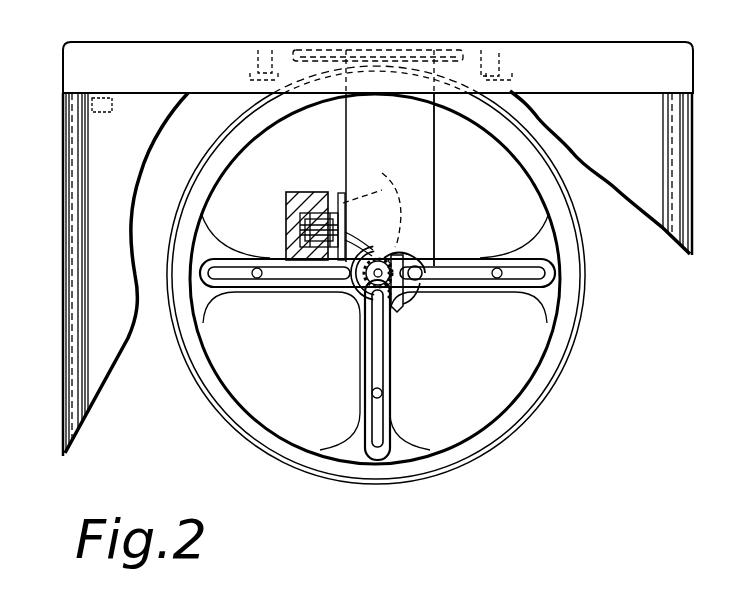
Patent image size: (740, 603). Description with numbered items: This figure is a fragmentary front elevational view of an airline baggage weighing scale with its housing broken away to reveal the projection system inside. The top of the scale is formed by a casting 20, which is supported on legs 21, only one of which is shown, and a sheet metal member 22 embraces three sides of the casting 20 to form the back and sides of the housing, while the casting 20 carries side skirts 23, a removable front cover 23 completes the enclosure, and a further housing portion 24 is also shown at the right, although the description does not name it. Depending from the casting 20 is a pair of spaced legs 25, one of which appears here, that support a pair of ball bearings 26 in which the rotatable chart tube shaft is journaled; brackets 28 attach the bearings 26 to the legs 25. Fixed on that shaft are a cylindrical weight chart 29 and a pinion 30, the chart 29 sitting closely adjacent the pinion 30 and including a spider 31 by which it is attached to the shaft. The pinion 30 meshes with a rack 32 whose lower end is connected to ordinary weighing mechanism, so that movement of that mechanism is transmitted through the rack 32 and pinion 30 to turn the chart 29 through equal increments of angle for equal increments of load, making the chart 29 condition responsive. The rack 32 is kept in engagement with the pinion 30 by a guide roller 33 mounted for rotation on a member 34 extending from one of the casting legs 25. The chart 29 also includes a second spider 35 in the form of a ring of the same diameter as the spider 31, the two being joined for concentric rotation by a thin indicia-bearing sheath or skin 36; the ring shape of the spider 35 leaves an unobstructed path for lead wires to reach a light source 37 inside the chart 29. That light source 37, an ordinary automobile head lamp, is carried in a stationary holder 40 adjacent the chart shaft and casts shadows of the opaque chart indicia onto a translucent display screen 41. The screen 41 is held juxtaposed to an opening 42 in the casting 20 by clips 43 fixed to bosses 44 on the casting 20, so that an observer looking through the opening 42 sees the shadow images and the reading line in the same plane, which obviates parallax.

The casting 20 is at (590, 12).
The legs 21 is at (76, 216).
The sheet metal member 22 is at (63, 247).
The side skirts 23 is at (377, 272).
The right upright 24 is at (677, 84).
The spaced legs 25 is at (434, 168).
The ball bearings 26 is at (373, 252).
The brackets 28 is at (348, 240).
The cylindrical weight chart 29 is at (570, 401).
The pinion 30 is at (395, 253).
The spider 31 is at (392, 398).
The rack 32 is at (402, 310).
The guide roller 33 is at (425, 286).
The member 34 is at (433, 270).
The second spider 35 is at (528, 376).
The indicia-bearing sheath 36 is at (192, 364).
The light source 37 is at (381, 186).
The stationary holder 40 is at (286, 200).
The display screen 41 is at (402, 66).
The opening 42 is at (374, 45).
The clips 43 is at (258, 80).
The bosses 44 is at (270, 58).